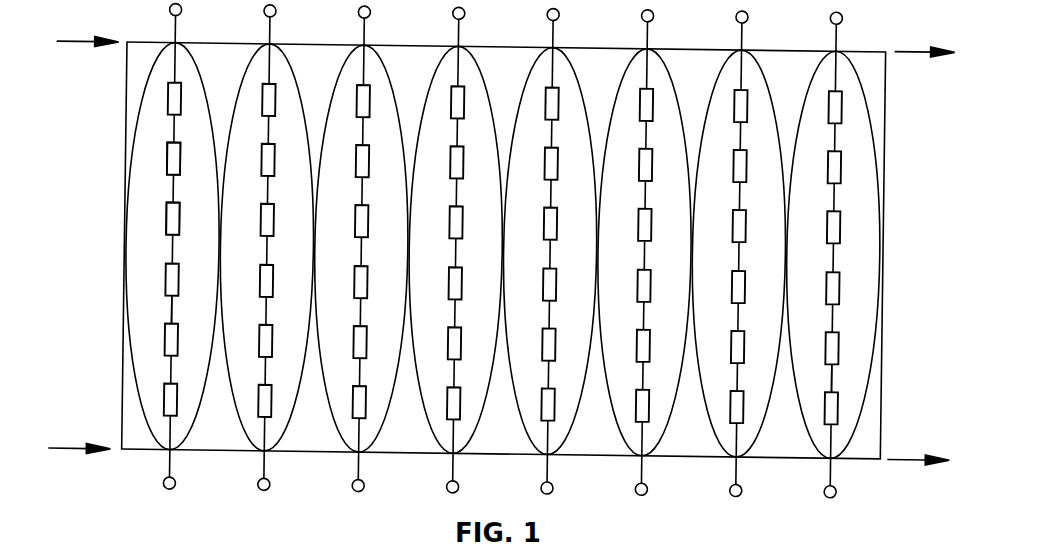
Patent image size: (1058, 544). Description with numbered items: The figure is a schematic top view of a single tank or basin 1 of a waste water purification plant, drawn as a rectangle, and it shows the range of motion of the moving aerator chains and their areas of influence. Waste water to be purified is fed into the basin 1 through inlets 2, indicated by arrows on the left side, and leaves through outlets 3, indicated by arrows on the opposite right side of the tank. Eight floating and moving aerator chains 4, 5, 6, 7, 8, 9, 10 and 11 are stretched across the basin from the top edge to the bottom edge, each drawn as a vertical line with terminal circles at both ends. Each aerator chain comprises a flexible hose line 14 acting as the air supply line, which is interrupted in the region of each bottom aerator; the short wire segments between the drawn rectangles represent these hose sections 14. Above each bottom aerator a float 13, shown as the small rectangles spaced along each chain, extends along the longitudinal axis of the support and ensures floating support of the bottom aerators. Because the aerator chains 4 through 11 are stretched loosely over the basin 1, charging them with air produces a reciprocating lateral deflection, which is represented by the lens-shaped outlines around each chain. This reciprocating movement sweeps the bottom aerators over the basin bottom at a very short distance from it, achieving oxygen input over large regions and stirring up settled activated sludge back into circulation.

The basin 1 is at (886, 320).
The inlets 2 is at (81, 460).
The outlets 3 is at (910, 461).
The aerator chain 4 is at (172, 471).
The aerator chain 5 is at (266, 471).
The aerator chain 6 is at (360, 471).
The aerator chain 7 is at (455, 471).
The aerator chain 8 is at (549, 471).
The aerator chain 9 is at (644, 471).
The aerator chain 10 is at (738, 471).
The aerator chain 11 is at (832, 471).
The float 13 is at (166, 224).
The flexible hose line 14 is at (834, 374).